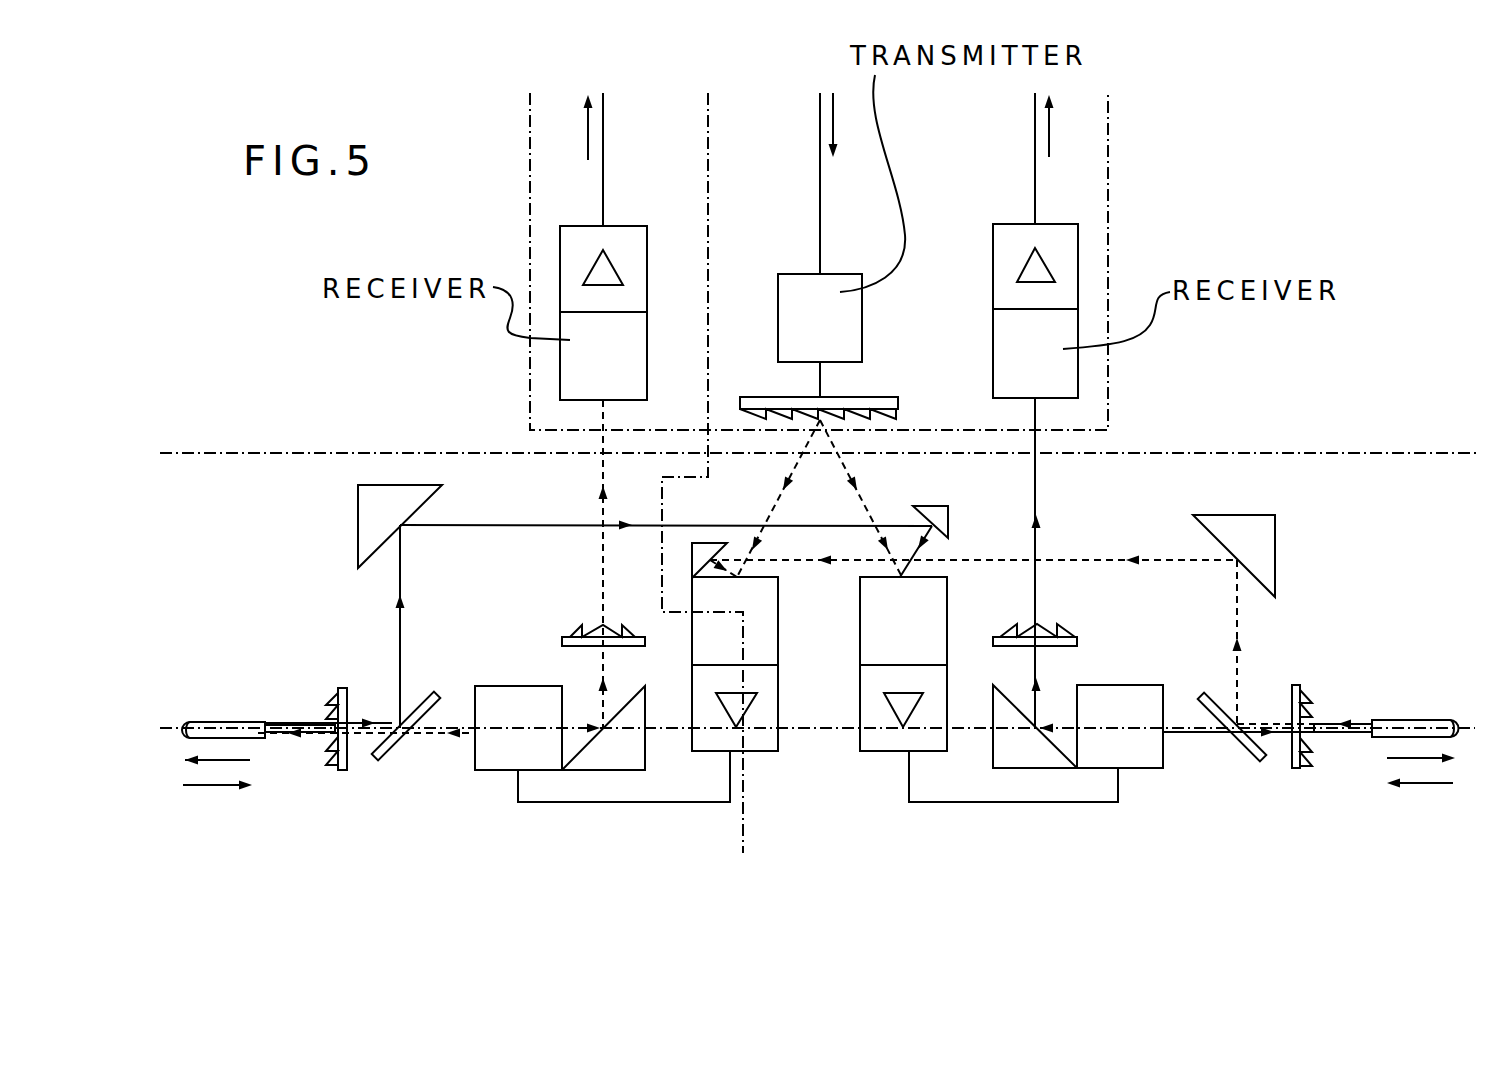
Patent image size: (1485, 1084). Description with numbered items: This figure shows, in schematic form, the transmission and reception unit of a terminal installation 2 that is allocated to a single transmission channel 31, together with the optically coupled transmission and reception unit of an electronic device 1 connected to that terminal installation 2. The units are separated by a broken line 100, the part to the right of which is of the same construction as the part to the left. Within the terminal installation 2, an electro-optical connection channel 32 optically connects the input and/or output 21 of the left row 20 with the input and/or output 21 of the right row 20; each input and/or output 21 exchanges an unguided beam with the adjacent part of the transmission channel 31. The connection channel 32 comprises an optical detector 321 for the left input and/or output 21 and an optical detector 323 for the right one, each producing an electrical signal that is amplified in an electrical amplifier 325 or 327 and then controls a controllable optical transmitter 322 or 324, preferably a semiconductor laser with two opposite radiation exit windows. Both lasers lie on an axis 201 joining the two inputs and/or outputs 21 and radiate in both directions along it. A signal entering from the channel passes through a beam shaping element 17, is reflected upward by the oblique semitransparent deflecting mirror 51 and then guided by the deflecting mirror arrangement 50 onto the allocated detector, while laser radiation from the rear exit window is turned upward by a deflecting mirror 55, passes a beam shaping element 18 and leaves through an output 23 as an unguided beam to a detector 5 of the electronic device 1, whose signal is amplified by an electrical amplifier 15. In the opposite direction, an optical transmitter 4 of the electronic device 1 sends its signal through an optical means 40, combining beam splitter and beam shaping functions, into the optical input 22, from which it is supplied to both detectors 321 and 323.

The electronic device 1 is at (1116, 218).
The terminal installation 2 is at (891, 322).
The optical transmitter 4 is at (838, 274).
The detector 5 is at (647, 370).
The electrical amplifier 15 is at (613, 226).
The beam shaping element 17 is at (342, 770).
The beam shaping element 18 is at (577, 637).
The row 20 is at (288, 772).
The input and/or output 21 is at (313, 712).
The optical input 22 is at (833, 442).
The output 23 is at (588, 467).
The transmission channel 31 is at (213, 722).
The electro-optical connection channel 32 is at (945, 552).
The optical means 40 is at (757, 388).
The deflecting mirror arrangement 50 is at (348, 523).
The semitransparent deflecting mirror 51 is at (390, 752).
The deflecting mirror 55 is at (645, 757).
The broken line 100 is at (708, 218).
The axis 201 is at (822, 728).
The optical detector 321 is at (860, 638).
The controllable optical transmitter 322 is at (1140, 768).
The optical detector 323 is at (778, 638).
The controllable optical transmitter 324 is at (488, 770).
The electrical amplifier 325 is at (875, 751).
The electrical amplifier 327 is at (760, 751).